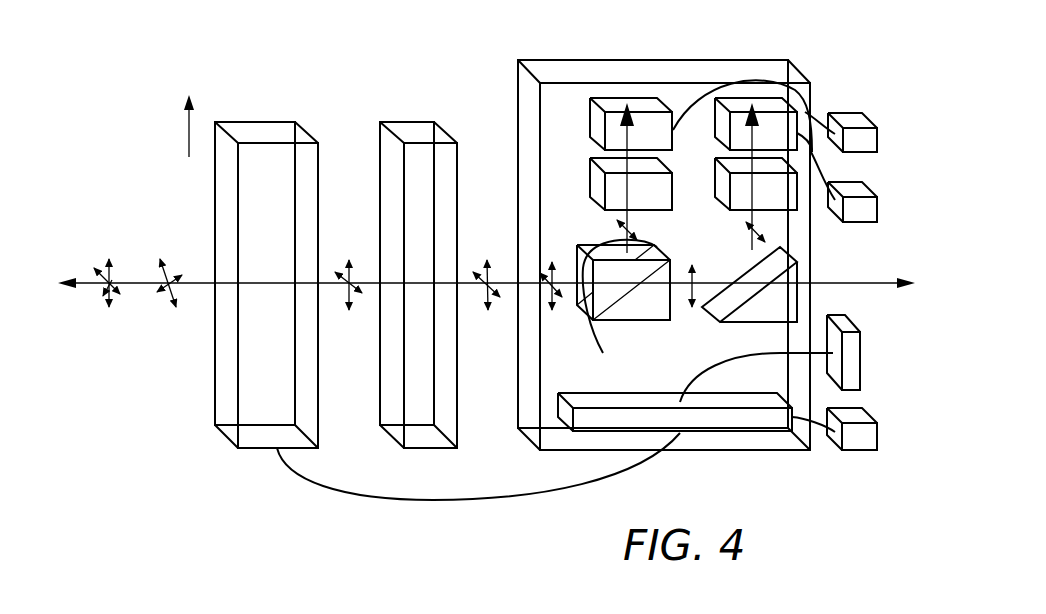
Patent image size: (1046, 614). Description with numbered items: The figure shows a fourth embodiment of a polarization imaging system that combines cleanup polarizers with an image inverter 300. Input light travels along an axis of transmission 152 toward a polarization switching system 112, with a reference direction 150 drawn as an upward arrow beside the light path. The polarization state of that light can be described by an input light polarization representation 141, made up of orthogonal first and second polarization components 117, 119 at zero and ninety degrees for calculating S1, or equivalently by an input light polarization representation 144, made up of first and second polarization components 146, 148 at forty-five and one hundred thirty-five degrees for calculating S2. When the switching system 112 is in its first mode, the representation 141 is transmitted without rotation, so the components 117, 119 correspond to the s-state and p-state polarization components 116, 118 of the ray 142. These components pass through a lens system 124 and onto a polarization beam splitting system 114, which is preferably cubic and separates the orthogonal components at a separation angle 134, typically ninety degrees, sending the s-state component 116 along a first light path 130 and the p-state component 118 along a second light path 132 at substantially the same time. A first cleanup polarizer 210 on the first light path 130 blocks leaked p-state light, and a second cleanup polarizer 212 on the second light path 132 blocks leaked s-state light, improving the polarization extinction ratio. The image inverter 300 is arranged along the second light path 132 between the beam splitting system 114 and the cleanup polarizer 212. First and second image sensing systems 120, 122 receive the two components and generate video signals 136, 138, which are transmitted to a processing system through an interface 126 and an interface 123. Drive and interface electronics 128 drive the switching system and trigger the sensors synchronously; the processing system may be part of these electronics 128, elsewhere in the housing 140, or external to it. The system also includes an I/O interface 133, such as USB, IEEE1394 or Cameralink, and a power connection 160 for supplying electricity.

The polarization switching system 112 is at (268, 126).
The lens system 124 is at (420, 126).
The housing 140 is at (576, 64).
The first image sensing system 120 is at (639, 100).
The first light path 130 is at (633, 137).
The second image sensing system 122 is at (767, 100).
The video signal 136 is at (798, 92).
The video signal 138 is at (815, 157).
The interface 126 is at (878, 136).
The interface 123 is at (878, 207).
The first cleanup polarizer 210 is at (590, 172).
The second cleanup polarizer 212 is at (787, 212).
The polarization beam splitting system 114 is at (586, 313).
The second light path 132 is at (664, 285).
The separation angle 134 is at (620, 310).
The s-state polarization component 116 is at (352, 283).
The p-state polarization component 118 is at (350, 288).
The image inverter 300 is at (802, 280).
The drive and interface electronics 128 is at (722, 433).
The I/O interface 133 is at (862, 350).
The power connection 160 is at (878, 438).
The axis of transmission 152 is at (865, 288).
The reference direction 150 is at (188, 124).
The input light polarization representation 141 is at (106, 265).
The second polarization component 119 is at (108, 290).
The first polarization component 117 is at (116, 282).
The second polarization component 148 is at (162, 278).
The first polarization component 146 is at (171, 272).
The input light polarization representation 144 is at (173, 303).
The ray 142 is at (346, 262).